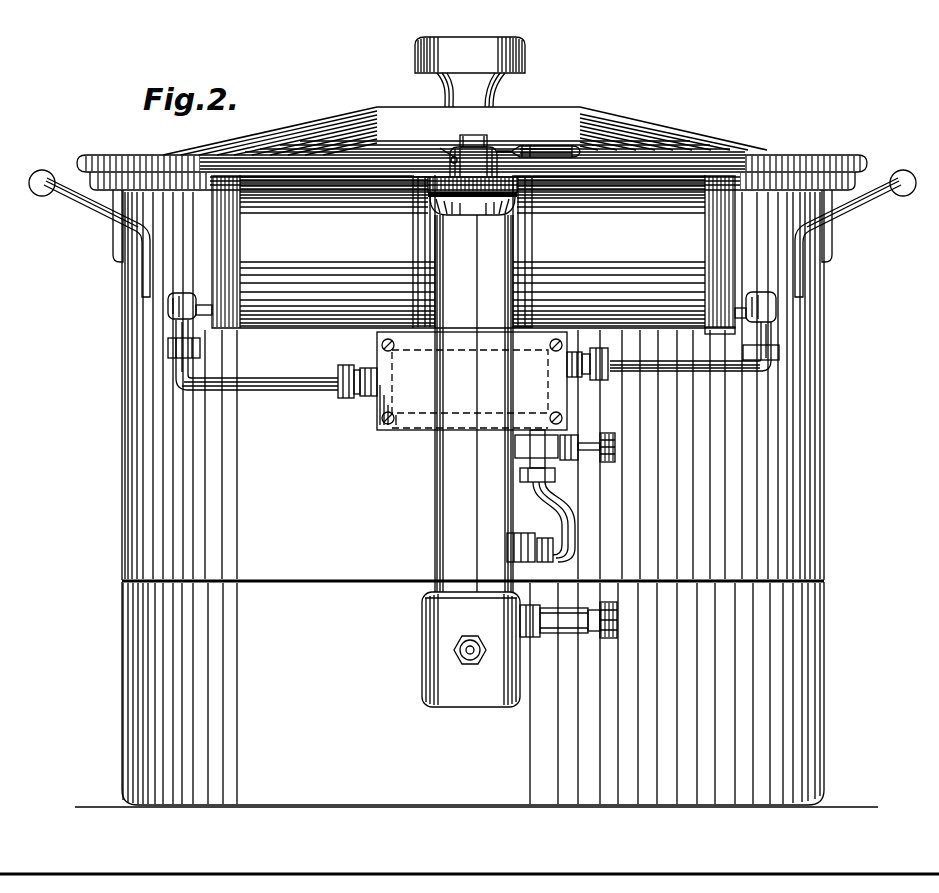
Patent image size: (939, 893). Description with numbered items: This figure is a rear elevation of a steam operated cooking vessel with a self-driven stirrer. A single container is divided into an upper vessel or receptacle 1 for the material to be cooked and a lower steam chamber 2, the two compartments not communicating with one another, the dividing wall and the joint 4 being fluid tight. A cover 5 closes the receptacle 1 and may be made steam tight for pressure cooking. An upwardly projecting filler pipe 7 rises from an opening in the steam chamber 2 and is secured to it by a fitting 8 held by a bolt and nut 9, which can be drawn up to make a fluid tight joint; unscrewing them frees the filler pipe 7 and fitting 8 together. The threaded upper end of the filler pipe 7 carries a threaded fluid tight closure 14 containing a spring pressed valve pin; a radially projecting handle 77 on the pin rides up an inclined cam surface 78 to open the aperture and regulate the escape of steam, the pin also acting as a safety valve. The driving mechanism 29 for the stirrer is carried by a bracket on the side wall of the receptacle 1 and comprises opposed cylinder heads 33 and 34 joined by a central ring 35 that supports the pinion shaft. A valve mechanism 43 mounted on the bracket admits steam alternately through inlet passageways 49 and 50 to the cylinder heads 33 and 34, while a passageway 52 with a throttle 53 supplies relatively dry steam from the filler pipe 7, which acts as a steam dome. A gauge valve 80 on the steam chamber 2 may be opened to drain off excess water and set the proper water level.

The vessel or receptacle 1 is at (808, 330).
The steam chamber 2 is at (787, 655).
The joint 4 is at (508, 59).
The cover 5 is at (322, 128).
The filler pipe 7 is at (437, 516).
The fitting 8 is at (424, 697).
The bolt and nut 9 is at (452, 653).
The threaded fluid tight closure 14 is at (428, 184).
The driving mechanism 29 is at (212, 248).
The cylinder head 33 is at (276, 205).
The cylinder head 34 is at (660, 196).
The central ring 35 is at (528, 238).
The valve mechanism 43 is at (425, 405).
The inlet passageway 49 is at (266, 379).
The inlet passageway 50 is at (640, 356).
The passageway 52 is at (568, 523).
The throttle 53 is at (610, 460).
The handle 77 is at (545, 144).
The cam surface 78 is at (451, 158).
The gauge valve 80 is at (607, 640).